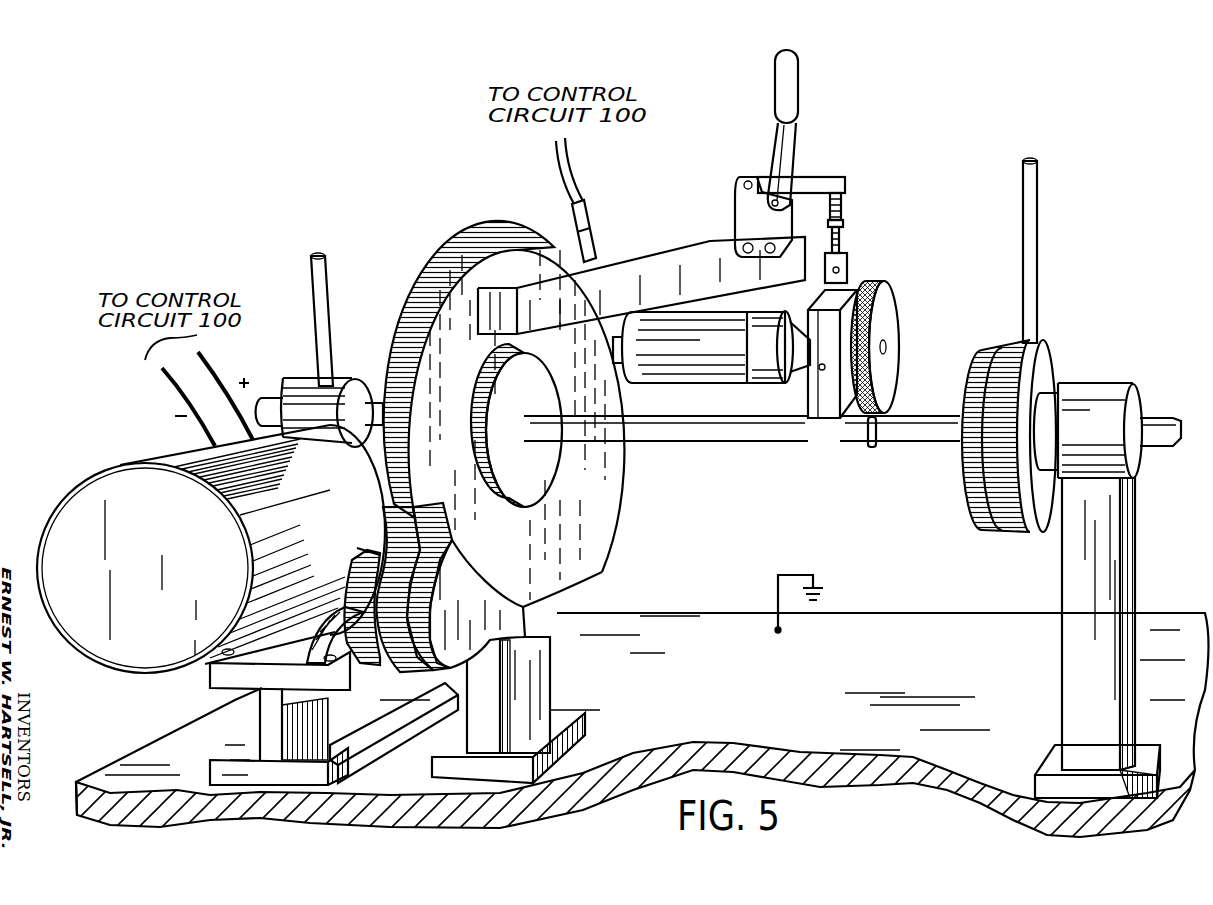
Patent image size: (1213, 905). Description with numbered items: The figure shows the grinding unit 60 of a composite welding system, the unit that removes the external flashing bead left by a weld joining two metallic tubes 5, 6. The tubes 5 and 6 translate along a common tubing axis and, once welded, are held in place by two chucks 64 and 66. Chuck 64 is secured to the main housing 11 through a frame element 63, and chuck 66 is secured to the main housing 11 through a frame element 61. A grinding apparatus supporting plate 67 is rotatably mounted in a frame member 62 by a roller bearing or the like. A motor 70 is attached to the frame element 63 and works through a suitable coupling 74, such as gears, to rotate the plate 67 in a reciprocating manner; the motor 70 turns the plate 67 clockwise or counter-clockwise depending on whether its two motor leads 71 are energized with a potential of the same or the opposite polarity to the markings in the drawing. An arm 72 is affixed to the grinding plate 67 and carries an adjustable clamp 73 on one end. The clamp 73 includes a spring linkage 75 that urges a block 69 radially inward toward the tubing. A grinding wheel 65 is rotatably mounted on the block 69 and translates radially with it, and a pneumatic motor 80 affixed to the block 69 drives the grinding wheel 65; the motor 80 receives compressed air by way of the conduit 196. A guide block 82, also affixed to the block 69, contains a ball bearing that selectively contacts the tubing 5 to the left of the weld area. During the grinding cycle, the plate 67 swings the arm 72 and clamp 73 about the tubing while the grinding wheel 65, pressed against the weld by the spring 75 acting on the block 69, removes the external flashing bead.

The metallic tube 5 is at (270, 402).
The metallic tube 6 is at (895, 427).
The main housing 11 is at (812, 694).
The grinding unit 60 is at (1163, 78).
The frame element 61 is at (1113, 543).
The frame member 62 is at (540, 677).
The frame element 63 is at (267, 725).
The chuck 64 is at (340, 378).
The grinding wheel 65 is at (880, 298).
The chuck 66 is at (1047, 350).
The grinding apparatus supporting plate 67 is at (567, 534).
The block 69 is at (871, 430).
The motor 70 is at (168, 569).
The motor leads 71 is at (207, 378).
The arm 72 is at (608, 270).
The adjustable clamp 73 is at (748, 212).
The coupling 74 is at (380, 482).
The spring linkage 75 is at (843, 207).
The pneumatic motor 80 is at (733, 384).
The guide block 82 is at (817, 418).
The conduit 196 is at (617, 178).